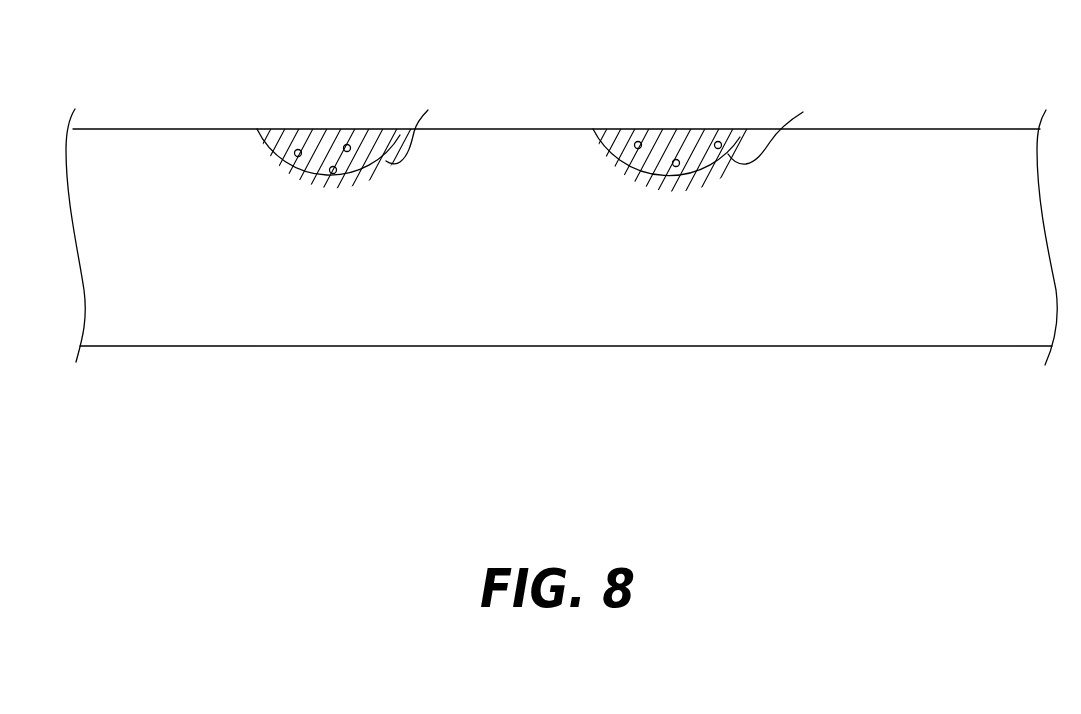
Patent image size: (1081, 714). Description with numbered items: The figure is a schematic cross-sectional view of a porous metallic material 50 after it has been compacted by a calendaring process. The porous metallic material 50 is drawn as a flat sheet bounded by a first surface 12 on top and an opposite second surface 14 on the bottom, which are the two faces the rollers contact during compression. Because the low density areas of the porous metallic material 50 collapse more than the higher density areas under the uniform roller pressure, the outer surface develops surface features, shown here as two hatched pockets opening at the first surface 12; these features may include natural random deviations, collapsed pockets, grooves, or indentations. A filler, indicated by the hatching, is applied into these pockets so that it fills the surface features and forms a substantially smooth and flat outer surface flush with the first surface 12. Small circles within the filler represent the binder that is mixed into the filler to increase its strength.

The first surface 12 is at (107, 128).
The second surface 14 is at (100, 348).
The porous metallic material 50 is at (1000, 330).